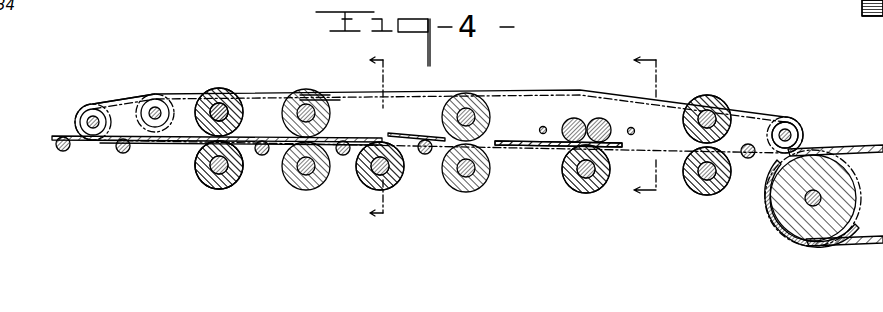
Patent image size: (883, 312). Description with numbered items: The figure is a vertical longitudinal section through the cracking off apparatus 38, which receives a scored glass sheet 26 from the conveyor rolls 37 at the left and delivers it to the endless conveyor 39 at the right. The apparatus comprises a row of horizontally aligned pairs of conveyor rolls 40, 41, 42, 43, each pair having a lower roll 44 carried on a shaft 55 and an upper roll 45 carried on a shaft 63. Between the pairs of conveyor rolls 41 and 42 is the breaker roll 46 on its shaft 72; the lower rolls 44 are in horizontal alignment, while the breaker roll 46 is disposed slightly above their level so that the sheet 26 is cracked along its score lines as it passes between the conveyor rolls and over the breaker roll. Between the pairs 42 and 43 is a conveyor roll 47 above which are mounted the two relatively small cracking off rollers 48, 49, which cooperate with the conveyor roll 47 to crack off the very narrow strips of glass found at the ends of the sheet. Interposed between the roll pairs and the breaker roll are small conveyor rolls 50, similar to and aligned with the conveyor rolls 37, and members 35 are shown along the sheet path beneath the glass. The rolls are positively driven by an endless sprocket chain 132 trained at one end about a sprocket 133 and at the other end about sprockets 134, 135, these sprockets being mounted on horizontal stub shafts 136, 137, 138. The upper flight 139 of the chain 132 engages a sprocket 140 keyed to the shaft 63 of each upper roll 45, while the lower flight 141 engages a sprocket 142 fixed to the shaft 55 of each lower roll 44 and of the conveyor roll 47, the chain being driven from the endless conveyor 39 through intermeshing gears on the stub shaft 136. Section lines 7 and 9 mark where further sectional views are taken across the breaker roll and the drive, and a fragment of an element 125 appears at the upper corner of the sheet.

The section line 7- 7 is at (384, 137).
The section line 9- 9 is at (651, 124).
The glass sheet 26 is at (160, 140).
The guide plate 35 is at (414, 122).
The conveyor rolls 37 is at (68, 150).
The cracking off apparatus 38 is at (528, 93).
The endless conveyor 39 is at (827, 142).
The pair of conveyor rolls 40 is at (209, 192).
The pair of conveyor rolls 41 is at (296, 187).
The pair of conveyor rolls 42 is at (455, 192).
The pair of conveyor rolls 43 is at (689, 196).
The lower roll 44 is at (240, 182).
The upper roll 45 is at (228, 104).
The breaker roll 46 is at (360, 171).
The conveyor roll 47 is at (592, 188).
The cracking off roller 48 is at (569, 121).
The cracking off roller 49 is at (608, 112).
The small conveyor rolls 50 is at (261, 156).
The shaft 55 is at (198, 181).
The shaft 63 is at (230, 112).
The shaft 72 is at (396, 170).
The housing part 125 is at (858, 22).
The endless sprocket chain 132 is at (290, 92).
The sprocket 133 is at (770, 124).
The sprocket 134 is at (212, 92).
The sprocket 135 is at (116, 102).
The stub shaft 136 is at (790, 128).
The stub shaft 137 is at (158, 108).
The stub shaft 138 is at (90, 118).
The upper flight 139 is at (405, 97).
The sprocket 140 is at (330, 94).
The lower flight 141 is at (522, 148).
The sprocket 142 is at (566, 178).